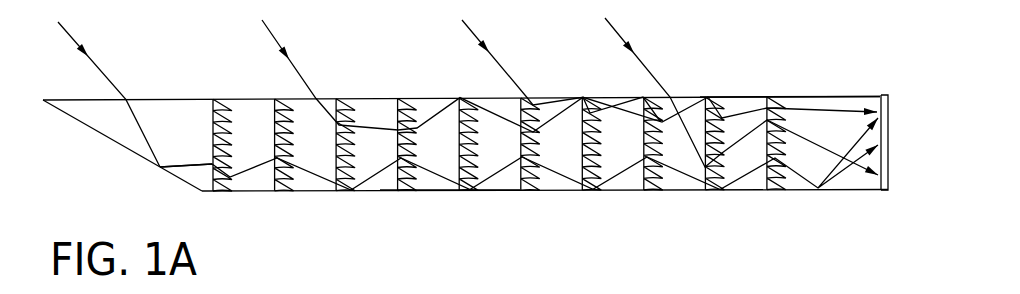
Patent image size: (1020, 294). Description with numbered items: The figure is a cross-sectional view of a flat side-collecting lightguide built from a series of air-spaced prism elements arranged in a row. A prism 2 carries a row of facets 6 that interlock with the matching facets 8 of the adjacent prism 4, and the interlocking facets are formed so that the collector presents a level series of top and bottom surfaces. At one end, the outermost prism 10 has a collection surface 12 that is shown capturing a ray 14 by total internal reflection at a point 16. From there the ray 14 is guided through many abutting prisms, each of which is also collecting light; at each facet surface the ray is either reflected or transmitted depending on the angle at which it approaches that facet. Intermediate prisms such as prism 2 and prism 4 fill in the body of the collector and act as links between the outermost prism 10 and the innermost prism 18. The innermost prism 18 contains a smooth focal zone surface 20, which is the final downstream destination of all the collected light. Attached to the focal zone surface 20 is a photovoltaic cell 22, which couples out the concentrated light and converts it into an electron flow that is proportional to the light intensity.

The prism 2 is at (383, 158).
The adjacent prism 4 is at (443, 158).
The facets 6 is at (400, 177).
The matching facets 8 is at (413, 182).
The outermost prism 10 is at (193, 156).
The collection surface 12 is at (122, 145).
The ray 14 is at (83, 26).
The point 16 is at (160, 170).
The innermost prism 18 is at (819, 103).
The focal zone surface 20 is at (880, 100).
The photovoltaic cell 22 is at (887, 193).